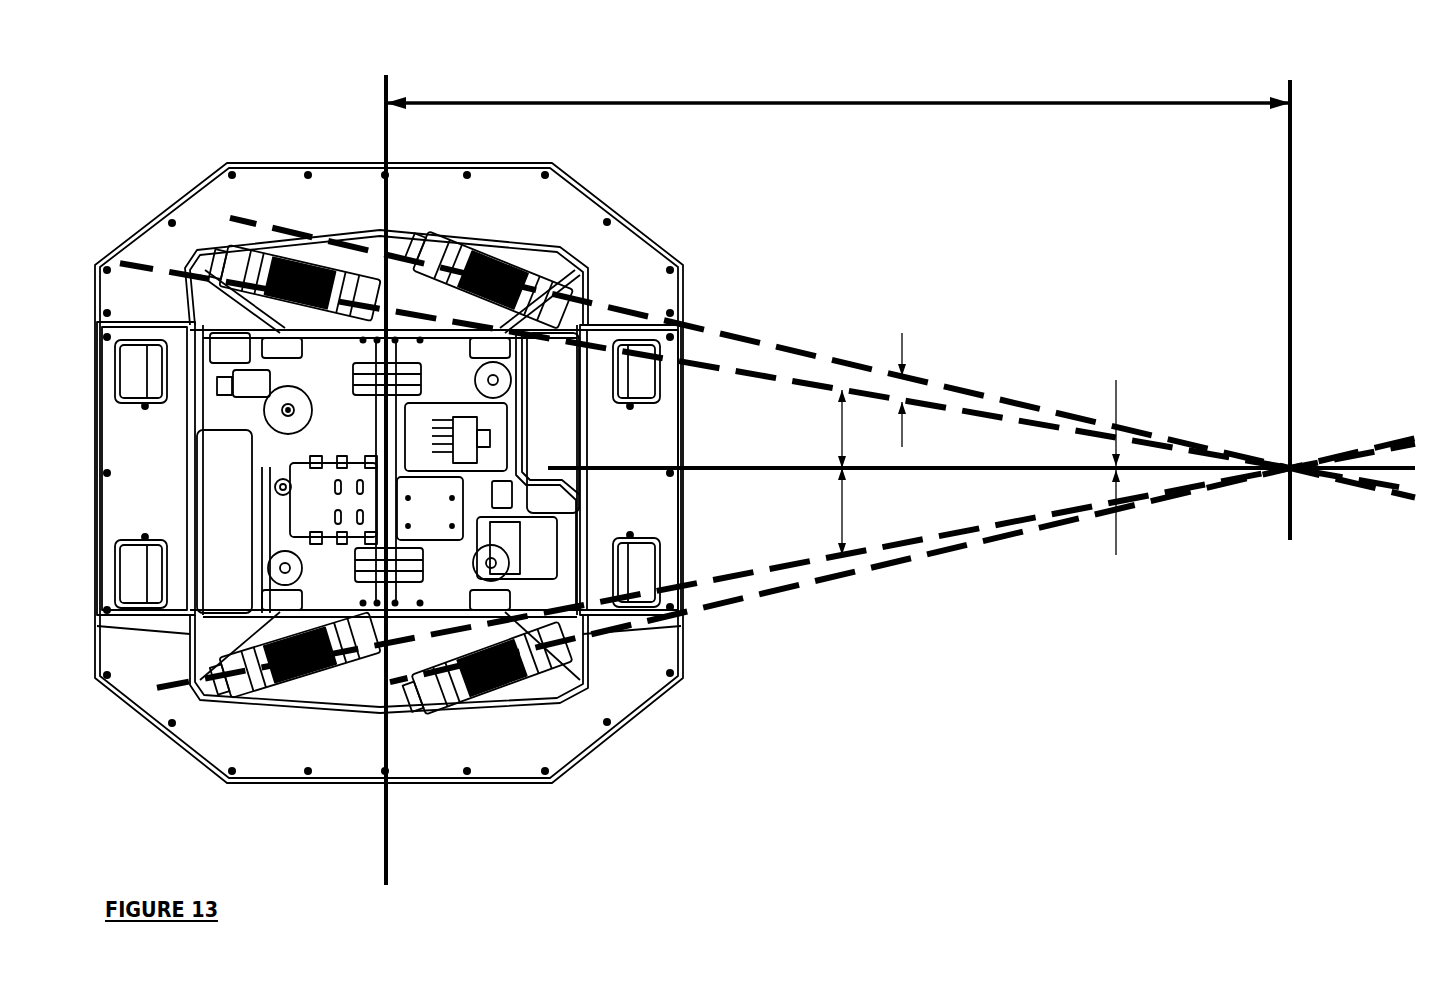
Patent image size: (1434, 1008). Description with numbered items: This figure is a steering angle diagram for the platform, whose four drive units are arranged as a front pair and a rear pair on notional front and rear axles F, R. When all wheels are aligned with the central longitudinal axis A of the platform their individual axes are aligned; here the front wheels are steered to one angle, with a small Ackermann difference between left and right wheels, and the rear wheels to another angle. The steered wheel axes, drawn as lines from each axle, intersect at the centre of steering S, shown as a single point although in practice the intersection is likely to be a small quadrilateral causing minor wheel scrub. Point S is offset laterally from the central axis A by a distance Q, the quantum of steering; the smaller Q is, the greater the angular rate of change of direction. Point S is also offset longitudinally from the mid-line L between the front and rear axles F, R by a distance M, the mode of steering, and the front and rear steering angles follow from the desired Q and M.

The central longitudinal axis A is at (383, 143).
The mid-line L is at (725, 468).
The centre of steering S is at (1287, 472).
The quantum of steering Q is at (868, 102).
The front axle F is at (797, 380).
The rear axle R is at (773, 573).
The mode of steering M is at (1117, 410).